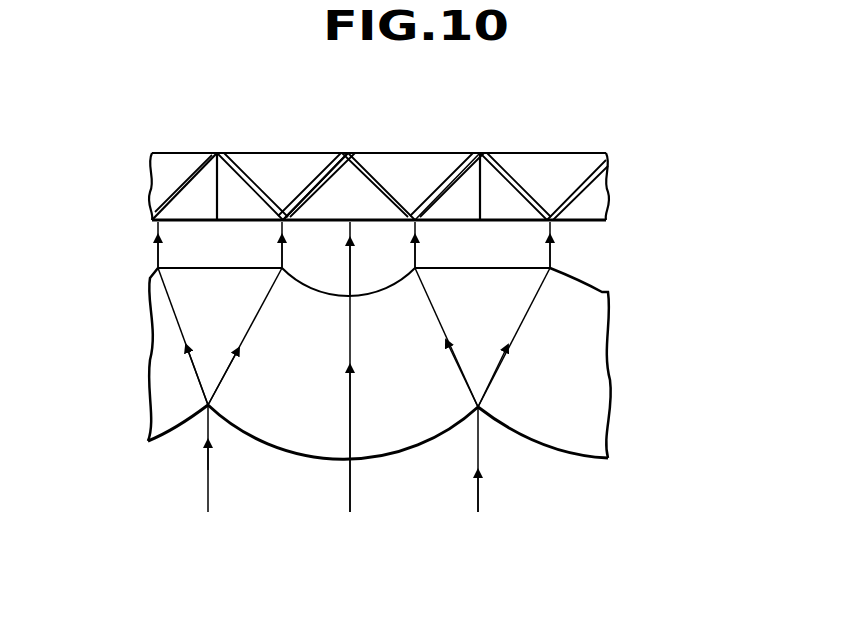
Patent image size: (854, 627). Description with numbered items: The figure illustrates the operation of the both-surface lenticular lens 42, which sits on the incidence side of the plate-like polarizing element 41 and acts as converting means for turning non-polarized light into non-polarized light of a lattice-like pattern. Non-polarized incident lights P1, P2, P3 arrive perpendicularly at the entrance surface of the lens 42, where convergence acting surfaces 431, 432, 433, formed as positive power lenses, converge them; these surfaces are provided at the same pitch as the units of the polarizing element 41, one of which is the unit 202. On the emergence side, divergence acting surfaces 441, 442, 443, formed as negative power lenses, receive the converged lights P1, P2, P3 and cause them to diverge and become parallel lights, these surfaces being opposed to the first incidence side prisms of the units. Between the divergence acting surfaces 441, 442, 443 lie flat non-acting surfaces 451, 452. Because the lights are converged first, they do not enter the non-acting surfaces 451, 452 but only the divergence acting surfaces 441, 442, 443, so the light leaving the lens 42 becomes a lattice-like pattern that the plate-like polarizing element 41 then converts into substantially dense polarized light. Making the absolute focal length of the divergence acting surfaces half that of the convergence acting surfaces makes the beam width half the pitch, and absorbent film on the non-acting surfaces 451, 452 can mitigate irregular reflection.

The unit of the plate-like polarizing element 202 is at (318, 153).
The plate-like polarizing element 41 is at (612, 190).
The both-surface lenticular lens 42 is at (397, 367).
The convergence acting surface 431 is at (158, 441).
The convergence acting surface 432 is at (415, 453).
The convergence acting surface 433 is at (555, 454).
The divergence acting surface 441 is at (157, 268).
The divergence acting surface 442 is at (312, 290).
The divergence acting surface 443 is at (600, 292).
The non-acting surface 451 is at (208, 268).
The non-acting surface 452 is at (498, 268).
The incident light P1 is at (220, 384).
The incident light P2 is at (351, 384).
The incident light P3 is at (482, 385).